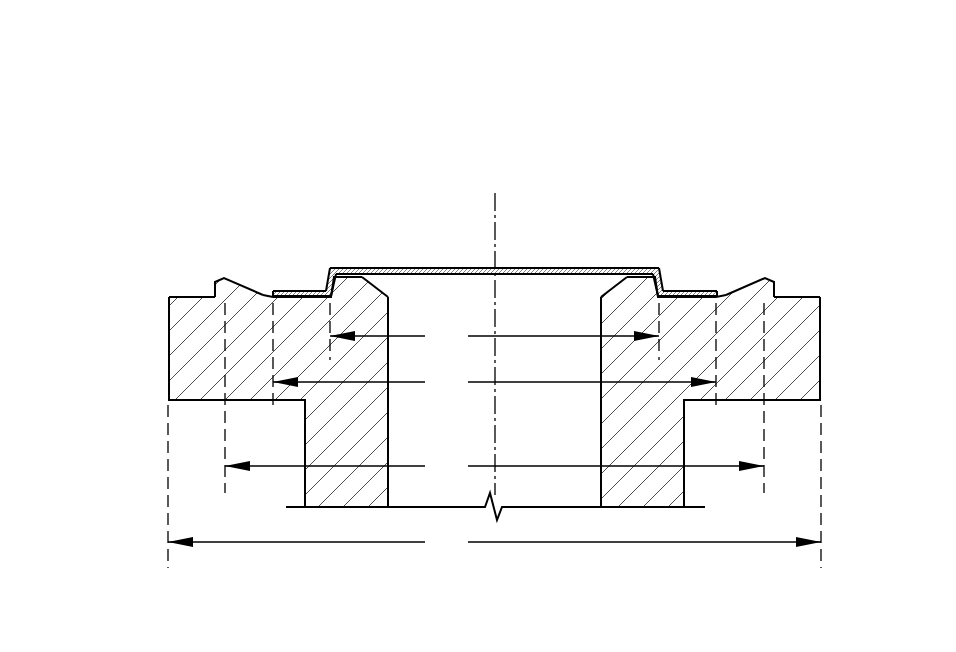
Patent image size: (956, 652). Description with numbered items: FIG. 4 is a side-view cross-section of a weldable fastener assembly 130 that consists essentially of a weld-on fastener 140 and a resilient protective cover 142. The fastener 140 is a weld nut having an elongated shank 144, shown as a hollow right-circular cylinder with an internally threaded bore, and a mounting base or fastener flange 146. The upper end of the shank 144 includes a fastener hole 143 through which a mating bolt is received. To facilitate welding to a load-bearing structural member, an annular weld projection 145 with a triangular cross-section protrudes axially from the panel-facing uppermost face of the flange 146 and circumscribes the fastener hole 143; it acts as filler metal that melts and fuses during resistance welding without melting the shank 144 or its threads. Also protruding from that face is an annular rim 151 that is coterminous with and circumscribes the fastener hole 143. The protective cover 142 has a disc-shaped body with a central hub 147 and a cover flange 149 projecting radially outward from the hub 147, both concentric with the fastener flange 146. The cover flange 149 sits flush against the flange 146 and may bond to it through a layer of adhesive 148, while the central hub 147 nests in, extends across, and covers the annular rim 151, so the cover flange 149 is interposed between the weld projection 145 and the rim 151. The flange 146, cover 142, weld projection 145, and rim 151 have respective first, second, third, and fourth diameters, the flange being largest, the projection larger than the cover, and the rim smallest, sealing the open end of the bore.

The weldable fastener assembly 130 is at (182, 155).
The weld-on fastener 140 is at (205, 447).
The protective cover 142 is at (475, 182).
The fastener hole 143 is at (607, 282).
The shank 144 is at (305, 479).
The annular weld projection 145 is at (237, 286).
The fastener flange 146 is at (169, 355).
The central hub 147 is at (437, 268).
The layer of adhesive 148 is at (288, 293).
The cover flange 149 is at (325, 290).
The annular rim 151 is at (363, 269).